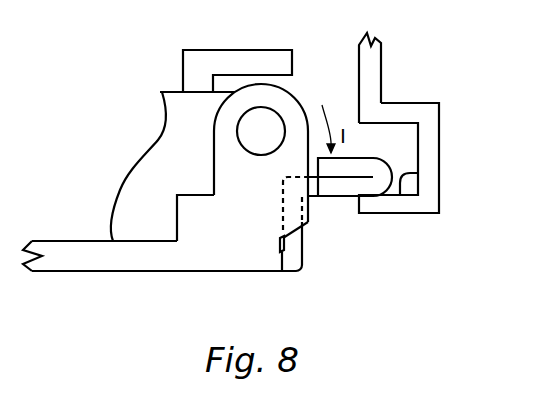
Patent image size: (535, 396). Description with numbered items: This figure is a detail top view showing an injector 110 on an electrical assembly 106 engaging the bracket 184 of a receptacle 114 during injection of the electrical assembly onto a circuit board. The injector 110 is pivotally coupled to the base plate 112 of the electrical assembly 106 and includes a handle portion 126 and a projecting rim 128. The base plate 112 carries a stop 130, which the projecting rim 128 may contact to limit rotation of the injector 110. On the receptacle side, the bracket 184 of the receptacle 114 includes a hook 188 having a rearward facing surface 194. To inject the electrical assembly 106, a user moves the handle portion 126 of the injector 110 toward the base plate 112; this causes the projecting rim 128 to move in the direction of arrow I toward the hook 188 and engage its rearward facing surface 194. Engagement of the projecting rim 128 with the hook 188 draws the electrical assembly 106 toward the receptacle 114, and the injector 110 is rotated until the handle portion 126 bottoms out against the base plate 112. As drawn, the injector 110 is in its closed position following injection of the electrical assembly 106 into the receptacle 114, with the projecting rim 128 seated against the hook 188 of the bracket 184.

The electrical assembly 106 is at (141, 145).
The injector 110 is at (215, 255).
The base plate 112 is at (183, 100).
The receptacle 114 is at (389, 87).
The handle portion 126 is at (77, 262).
The projecting rim 128 is at (339, 183).
The stop 130 is at (232, 62).
The bracket 184 is at (368, 72).
The hook 188 is at (430, 119).
The rearward facing surface 194 is at (418, 173).